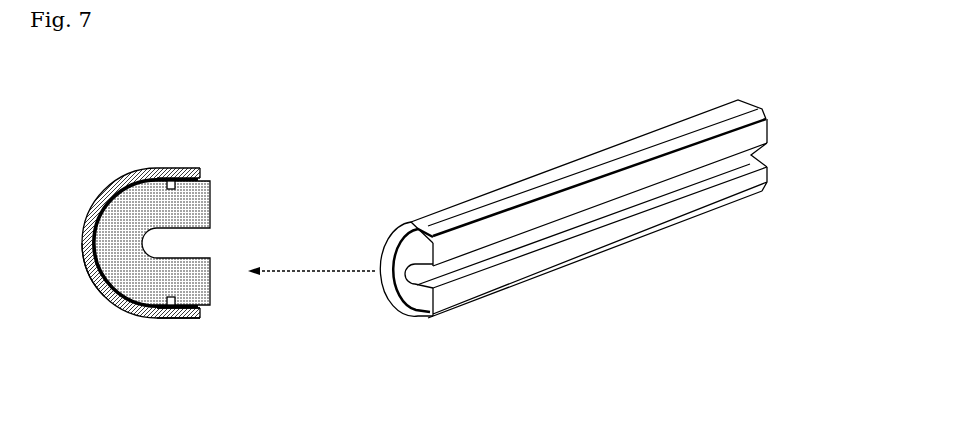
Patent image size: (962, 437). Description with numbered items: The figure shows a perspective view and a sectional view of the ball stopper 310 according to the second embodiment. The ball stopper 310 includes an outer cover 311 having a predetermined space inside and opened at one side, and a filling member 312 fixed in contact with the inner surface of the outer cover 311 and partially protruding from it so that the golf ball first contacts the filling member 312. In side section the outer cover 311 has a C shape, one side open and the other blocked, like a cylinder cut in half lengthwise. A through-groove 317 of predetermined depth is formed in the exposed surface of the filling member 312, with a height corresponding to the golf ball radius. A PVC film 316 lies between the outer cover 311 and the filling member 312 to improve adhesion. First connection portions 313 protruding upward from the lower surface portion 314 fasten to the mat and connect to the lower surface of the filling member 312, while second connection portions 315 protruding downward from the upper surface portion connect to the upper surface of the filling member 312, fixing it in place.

The ball stopper 310 is at (88, 168).
The outer cover 311 is at (170, 168).
The filling member 312 is at (204, 203).
The first connection portions 313 is at (189, 318).
The lower surface portion 314 is at (168, 318).
The second connection portions 315 is at (185, 178).
The PVC film 316 is at (100, 292).
The through-groove 317 is at (202, 240).